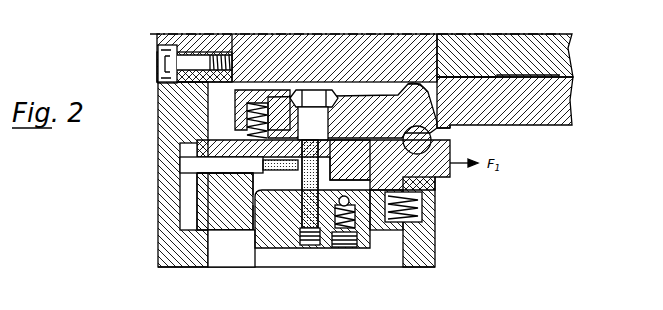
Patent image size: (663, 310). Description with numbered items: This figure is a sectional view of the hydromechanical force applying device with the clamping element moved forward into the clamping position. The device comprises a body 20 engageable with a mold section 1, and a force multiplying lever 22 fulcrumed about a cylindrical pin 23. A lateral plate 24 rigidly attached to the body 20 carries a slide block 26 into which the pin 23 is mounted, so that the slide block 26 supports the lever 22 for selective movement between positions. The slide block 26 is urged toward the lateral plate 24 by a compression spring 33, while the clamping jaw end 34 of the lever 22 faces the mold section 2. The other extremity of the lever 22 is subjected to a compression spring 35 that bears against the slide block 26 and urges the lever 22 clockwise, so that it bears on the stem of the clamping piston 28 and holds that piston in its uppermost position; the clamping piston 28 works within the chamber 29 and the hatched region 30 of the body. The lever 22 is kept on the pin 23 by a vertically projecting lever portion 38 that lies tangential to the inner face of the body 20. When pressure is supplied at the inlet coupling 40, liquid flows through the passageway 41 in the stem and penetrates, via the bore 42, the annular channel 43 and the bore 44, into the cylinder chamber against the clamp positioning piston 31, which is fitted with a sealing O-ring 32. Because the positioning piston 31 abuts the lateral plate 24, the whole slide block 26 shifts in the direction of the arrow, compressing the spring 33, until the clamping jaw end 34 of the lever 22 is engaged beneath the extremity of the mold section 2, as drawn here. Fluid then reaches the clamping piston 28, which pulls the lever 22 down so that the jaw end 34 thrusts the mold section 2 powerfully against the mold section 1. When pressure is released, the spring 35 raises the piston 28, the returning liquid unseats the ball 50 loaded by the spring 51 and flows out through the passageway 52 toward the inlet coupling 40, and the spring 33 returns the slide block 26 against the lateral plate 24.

The mold section 1 is at (565, 62).
The mold section 2 is at (565, 108).
The body 20 is at (313, 50).
The force multiplying lever 22 is at (352, 111).
The cylindrical pin 23 is at (440, 148).
The lateral plate 24 is at (160, 96).
The slide block 26 is at (418, 164).
The clamping piston 28 is at (270, 238).
The chamber 29 is at (231, 248).
The piston 30 is at (200, 178).
The clamp positioning piston 31 is at (200, 165).
The sealing O-ring 32 is at (200, 187).
The compression spring 33 is at (425, 208).
The clamping jaw end 34 is at (460, 130).
The compression spring 35 is at (240, 114).
The vertically projecting lever portion 38 is at (414, 84).
The inlet coupling 40 is at (310, 245).
The passageway 41 is at (299, 184).
The bore 42 is at (314, 115).
The annular channel 43 is at (225, 217).
The bore 44 is at (225, 188).
The ball 50 is at (355, 160).
The spring 51 is at (350, 246).
The passageway 52 is at (340, 247).